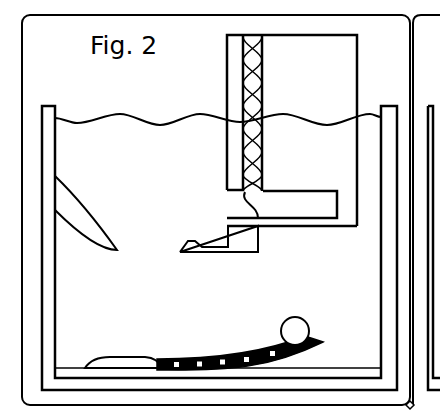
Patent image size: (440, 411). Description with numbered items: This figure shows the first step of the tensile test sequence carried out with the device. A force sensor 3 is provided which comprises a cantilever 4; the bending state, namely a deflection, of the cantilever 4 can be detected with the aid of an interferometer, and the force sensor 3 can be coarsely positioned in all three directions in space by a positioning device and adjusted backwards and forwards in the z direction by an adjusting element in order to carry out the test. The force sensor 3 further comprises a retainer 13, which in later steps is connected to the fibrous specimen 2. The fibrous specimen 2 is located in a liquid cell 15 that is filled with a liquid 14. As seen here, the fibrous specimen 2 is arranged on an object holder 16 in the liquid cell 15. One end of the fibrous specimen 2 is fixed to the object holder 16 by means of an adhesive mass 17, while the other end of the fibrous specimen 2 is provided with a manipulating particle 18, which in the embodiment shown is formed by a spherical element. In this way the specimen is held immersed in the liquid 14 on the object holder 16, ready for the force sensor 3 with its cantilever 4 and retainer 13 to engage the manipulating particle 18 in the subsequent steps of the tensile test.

The fibrous specimen 2 is at (225, 343).
The force sensor 3 is at (292, 130).
The cantilever 4 is at (296, 234).
The retainer 13 is at (223, 262).
The liquid 14 is at (150, 157).
The liquid cell 15 is at (51, 98).
The object holder 16 is at (68, 365).
The adhesive mass 17 is at (123, 345).
The manipulating particle 18 is at (317, 320).